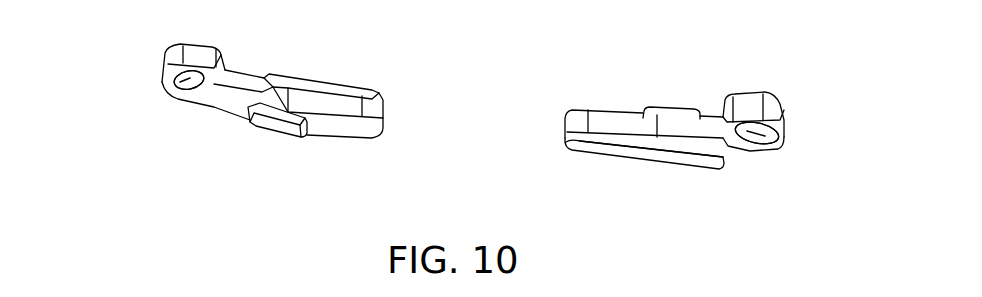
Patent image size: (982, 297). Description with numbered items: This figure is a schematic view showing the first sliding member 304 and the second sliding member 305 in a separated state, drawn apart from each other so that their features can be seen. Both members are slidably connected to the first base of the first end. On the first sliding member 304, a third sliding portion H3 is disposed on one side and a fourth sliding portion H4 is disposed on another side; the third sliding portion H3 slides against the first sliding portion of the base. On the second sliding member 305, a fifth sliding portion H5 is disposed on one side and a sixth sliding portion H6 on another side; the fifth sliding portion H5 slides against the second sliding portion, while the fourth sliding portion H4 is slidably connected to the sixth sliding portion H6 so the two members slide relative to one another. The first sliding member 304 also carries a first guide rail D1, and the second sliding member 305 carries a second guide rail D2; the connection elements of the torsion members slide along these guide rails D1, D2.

The first sliding member 304 is at (273, 115).
The second sliding member 305 is at (670, 136).
The first guide rail D1 is at (162, 89).
The second guide rail D2 is at (767, 140).
The third sliding portion H3 is at (296, 138).
The fourth sliding portion H4 is at (369, 85).
The fifth sliding portion H5 is at (675, 110).
The sixth sliding portion H6 is at (582, 147).